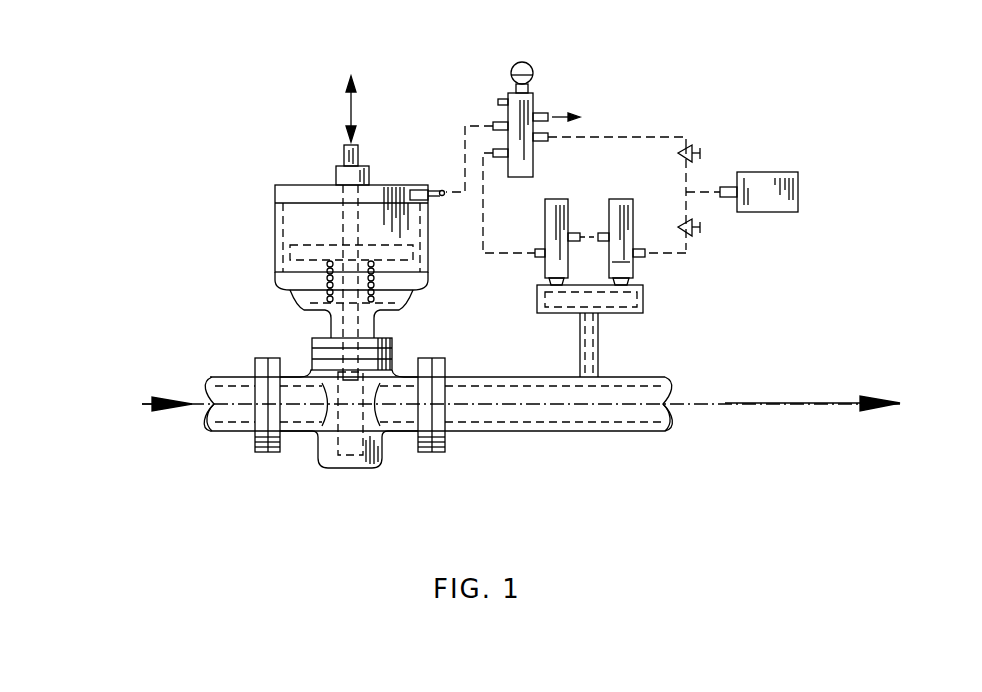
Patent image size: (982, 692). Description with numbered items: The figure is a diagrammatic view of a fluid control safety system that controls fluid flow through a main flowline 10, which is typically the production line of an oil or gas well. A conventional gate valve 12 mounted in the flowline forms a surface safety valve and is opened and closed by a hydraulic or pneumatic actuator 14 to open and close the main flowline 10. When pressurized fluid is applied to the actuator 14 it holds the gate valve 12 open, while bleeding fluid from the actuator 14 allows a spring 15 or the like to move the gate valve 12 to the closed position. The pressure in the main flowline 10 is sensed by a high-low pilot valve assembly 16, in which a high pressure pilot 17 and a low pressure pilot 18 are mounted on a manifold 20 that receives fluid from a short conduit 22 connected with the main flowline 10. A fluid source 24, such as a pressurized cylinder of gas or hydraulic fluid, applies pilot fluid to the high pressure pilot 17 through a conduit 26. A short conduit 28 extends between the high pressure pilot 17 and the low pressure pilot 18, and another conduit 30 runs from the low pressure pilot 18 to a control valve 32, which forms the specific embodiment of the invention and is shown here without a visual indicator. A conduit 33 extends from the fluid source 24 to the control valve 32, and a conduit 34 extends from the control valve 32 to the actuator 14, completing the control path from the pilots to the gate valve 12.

The main flowline 10 is at (540, 431).
The gate valve 12 is at (406, 337).
The actuator 14 is at (275, 222).
The spring 15 is at (328, 296).
The high-low pilot valve assembly 16 is at (640, 190).
The high pressure pilot 17 is at (628, 264).
The low pressure pilot 18 is at (548, 268).
The manifold 20 is at (650, 303).
The short conduit 22 is at (595, 362).
The fluid source 24 is at (790, 192).
The conduit 26 is at (686, 250).
The short conduit 28 is at (590, 233).
The conduit 30 is at (483, 238).
The control valve 32 is at (548, 67).
The conduit 33 is at (668, 135).
The conduit 34 is at (464, 150).